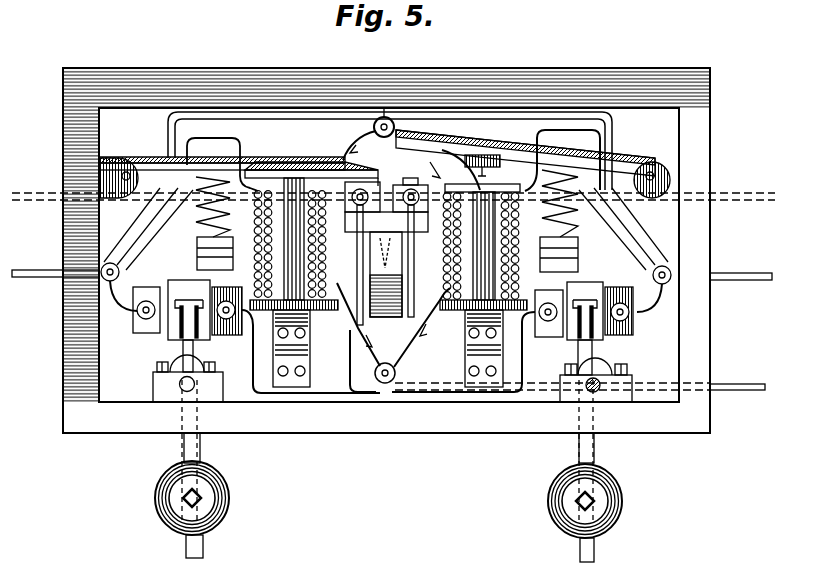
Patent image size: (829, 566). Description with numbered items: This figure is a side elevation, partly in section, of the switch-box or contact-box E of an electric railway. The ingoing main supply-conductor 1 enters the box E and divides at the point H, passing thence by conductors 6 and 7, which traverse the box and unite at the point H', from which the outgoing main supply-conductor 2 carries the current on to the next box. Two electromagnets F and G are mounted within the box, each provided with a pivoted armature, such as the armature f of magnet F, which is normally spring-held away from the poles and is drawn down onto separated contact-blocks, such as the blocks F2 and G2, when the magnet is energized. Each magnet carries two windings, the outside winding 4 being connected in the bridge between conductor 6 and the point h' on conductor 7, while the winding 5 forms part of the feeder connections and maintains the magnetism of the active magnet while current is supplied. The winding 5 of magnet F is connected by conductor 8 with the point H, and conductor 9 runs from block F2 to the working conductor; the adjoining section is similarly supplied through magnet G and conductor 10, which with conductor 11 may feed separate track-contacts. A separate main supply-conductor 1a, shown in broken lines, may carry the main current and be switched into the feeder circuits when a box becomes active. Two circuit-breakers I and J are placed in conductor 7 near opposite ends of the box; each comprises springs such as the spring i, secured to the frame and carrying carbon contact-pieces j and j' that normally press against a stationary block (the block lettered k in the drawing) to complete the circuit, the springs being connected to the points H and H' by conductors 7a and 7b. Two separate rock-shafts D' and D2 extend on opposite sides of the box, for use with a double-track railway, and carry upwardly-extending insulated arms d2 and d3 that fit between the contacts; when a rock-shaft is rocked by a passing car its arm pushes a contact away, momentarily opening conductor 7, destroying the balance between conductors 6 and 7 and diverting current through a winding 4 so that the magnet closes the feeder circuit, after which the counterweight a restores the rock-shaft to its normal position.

The contact-box E is at (386, 240).
The main supply-conductor 1a is at (393, 186).
The ingoing main supply-conductor 1 is at (55, 263).
The outgoing main supply-conductor 2 is at (741, 266).
The conductor 9 is at (351, 251).
The conductor 6 is at (369, 166).
The conductor 8 is at (148, 229).
The conductor 10 is at (623, 229).
The armature f is at (227, 164).
The contact-piece j is at (520, 246).
The winding 4 is at (233, 244).
The contact-block F2 is at (311, 189).
The electromagnet F is at (290, 239).
The electromagnet G is at (481, 242).
The winding 5 is at (266, 310).
The contact-block G2 is at (386, 247).
The supply-conductor 11 is at (414, 241).
The dividing point H is at (120, 273).
The uniting point H' is at (650, 278).
The conductor 7a is at (122, 308).
The conductor 7b is at (650, 315).
The circuit-breaker I is at (171, 300).
The contact block k is at (200, 285).
The circuit-breaker J is at (587, 302).
The spring i is at (596, 283).
The conductor 7 is at (253, 345).
The connection point h' is at (393, 337).
The insulated arm d2 is at (182, 356).
The insulated arm d3 is at (578, 355).
The rock-shaft D' is at (195, 371).
The rock-shaft D2 is at (600, 378).
The contact-piece j' is at (596, 365).
The counterweight a is at (229, 491).